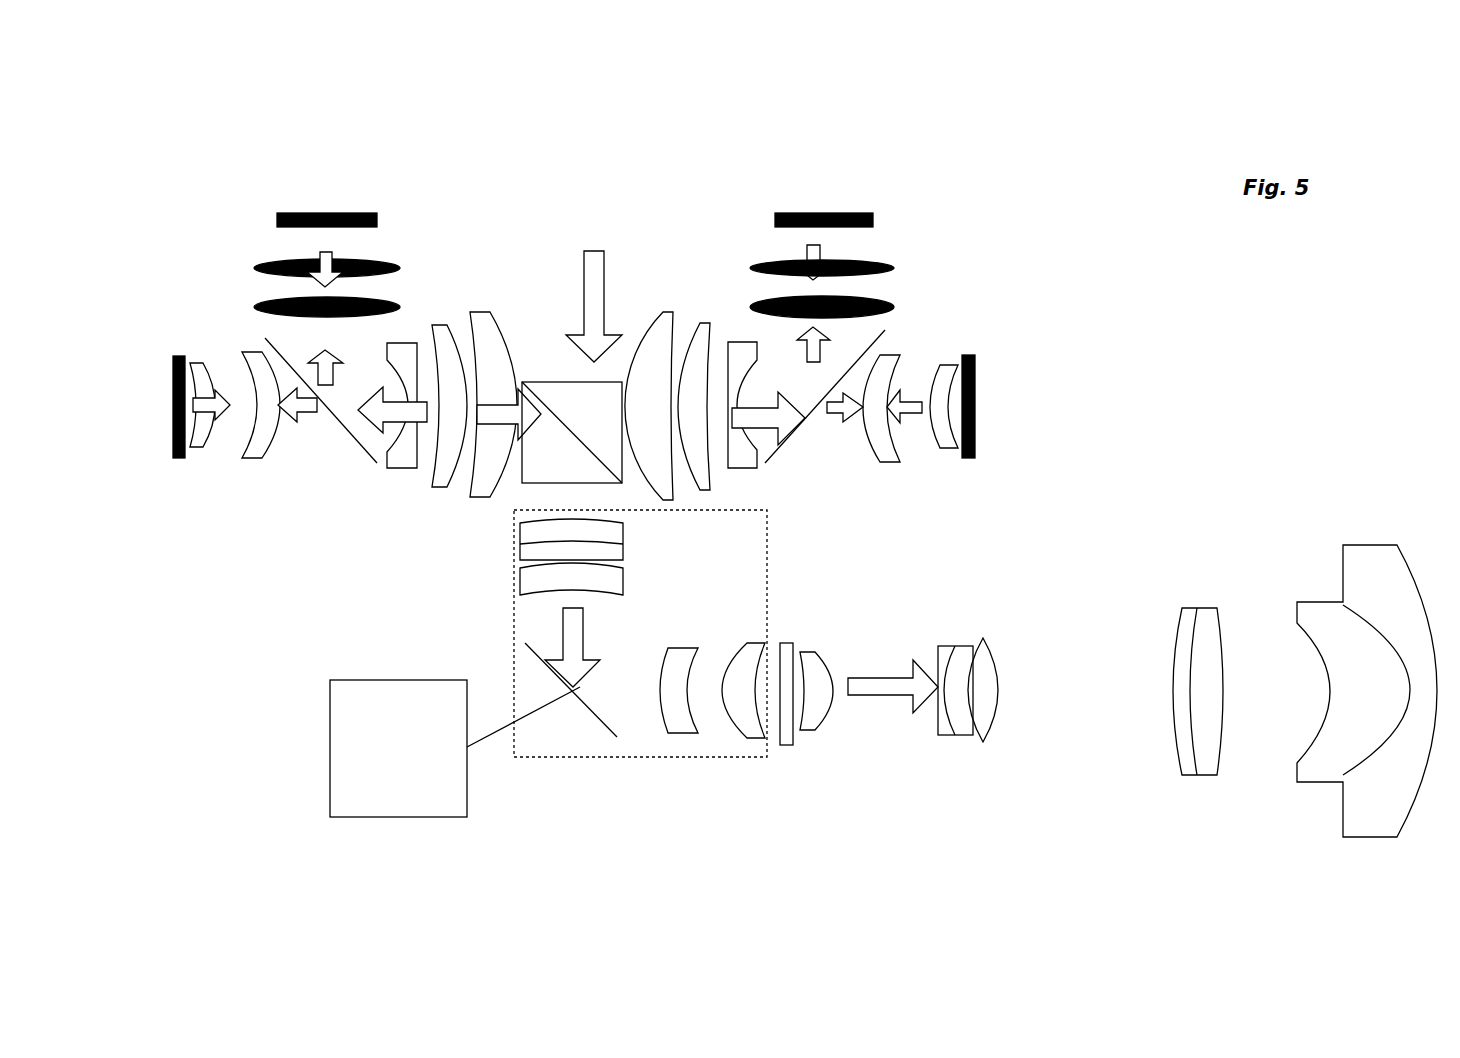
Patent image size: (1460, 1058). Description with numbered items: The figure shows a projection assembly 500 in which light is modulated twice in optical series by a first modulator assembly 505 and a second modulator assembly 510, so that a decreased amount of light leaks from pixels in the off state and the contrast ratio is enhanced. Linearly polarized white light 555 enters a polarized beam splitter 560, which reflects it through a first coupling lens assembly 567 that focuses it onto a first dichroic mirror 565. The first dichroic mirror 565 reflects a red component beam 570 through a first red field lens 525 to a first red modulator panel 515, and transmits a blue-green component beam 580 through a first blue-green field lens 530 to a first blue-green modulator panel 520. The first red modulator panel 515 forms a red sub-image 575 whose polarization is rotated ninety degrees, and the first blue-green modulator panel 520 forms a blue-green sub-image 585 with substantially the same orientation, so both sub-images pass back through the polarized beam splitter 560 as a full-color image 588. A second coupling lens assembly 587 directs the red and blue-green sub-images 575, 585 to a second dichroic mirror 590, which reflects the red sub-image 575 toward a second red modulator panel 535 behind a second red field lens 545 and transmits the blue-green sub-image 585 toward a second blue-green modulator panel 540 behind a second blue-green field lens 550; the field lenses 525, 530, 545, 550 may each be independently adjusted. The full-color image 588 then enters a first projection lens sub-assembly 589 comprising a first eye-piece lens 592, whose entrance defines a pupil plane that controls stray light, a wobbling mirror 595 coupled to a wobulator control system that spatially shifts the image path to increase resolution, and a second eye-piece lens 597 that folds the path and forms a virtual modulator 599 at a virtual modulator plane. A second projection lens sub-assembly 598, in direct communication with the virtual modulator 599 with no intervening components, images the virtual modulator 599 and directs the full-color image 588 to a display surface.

The projection assembly 500 is at (558, 120).
The first modulator assembly 505 is at (968, 212).
The second modulator assembly 510 is at (222, 192).
The first red modulator panel 515 is at (823, 213).
The first blue-green modulator panel 520 is at (977, 408).
The first red field lens 525 is at (898, 272).
The first blue-green field lens 530 is at (922, 468).
The second red modulator panel 535 is at (318, 213).
The second blue-green modulator panel 540 is at (173, 399).
The second red field lens 545 is at (400, 285).
The second blue-green field lens 550 is at (222, 459).
The polarized white light 555 is at (577, 297).
The polarized beam splitter 560 is at (522, 483).
The first dichroic mirror 565 is at (765, 464).
The first coupling lens assembly 567 is at (665, 297).
The red component beam 570 is at (790, 343).
The red sub-image 575 is at (334, 253).
The blue-green component beam 580 is at (832, 419).
The blue-green sub-image 585 is at (223, 387).
The second coupling lens assembly 587 is at (427, 503).
The full-color image 588 is at (383, 442).
The first projection lens sub-assembly 589 is at (668, 762).
The second dichroic mirror 590 is at (360, 449).
The first eye-piece lens 592 is at (638, 551).
The wobbling mirror 595 is at (573, 700).
The second eye-piece lens 597 is at (727, 632).
The second projection lens sub-assembly 598 is at (1153, 800).
The virtual modulator 599 is at (785, 745).